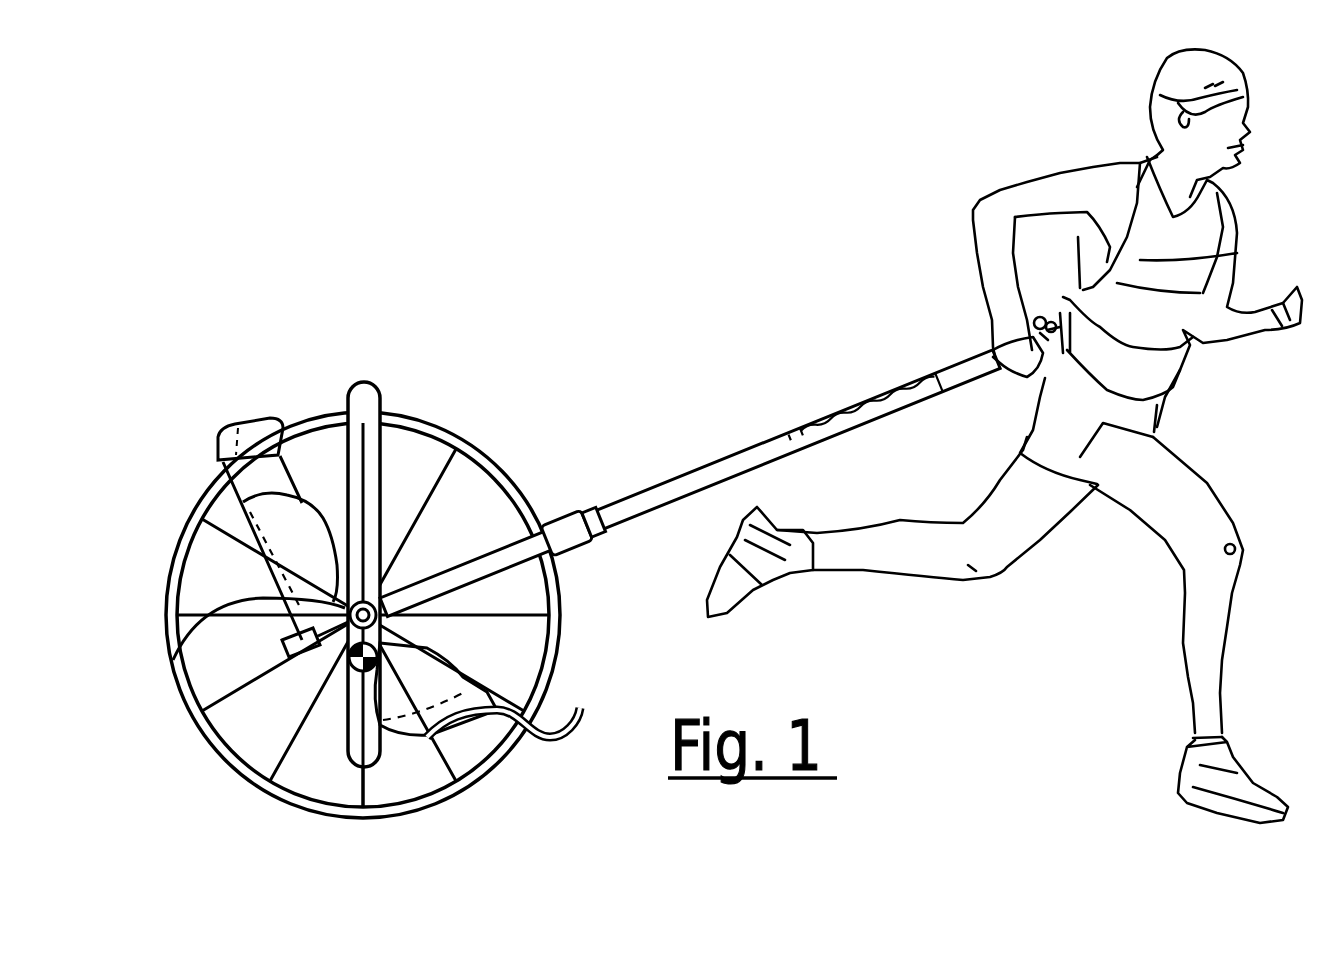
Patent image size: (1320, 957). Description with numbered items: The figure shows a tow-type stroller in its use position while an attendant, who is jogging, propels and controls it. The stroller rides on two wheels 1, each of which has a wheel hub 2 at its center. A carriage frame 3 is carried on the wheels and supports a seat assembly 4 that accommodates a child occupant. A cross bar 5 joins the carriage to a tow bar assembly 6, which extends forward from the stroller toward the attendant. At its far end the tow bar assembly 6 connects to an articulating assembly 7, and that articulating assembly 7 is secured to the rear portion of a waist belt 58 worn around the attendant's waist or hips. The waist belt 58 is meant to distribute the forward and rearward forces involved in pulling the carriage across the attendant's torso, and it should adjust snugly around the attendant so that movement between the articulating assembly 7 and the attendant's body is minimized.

The wheel 1 is at (413, 418).
The wheel hub 2 is at (215, 605).
The carriage frame 3 is at (363, 382).
The seat assembly 4 is at (270, 520).
The cross bar 5 is at (556, 518).
The tow bar assembly 6 is at (748, 446).
The articulating assembly 7 is at (1040, 314).
The waist belt 58 is at (1183, 363).